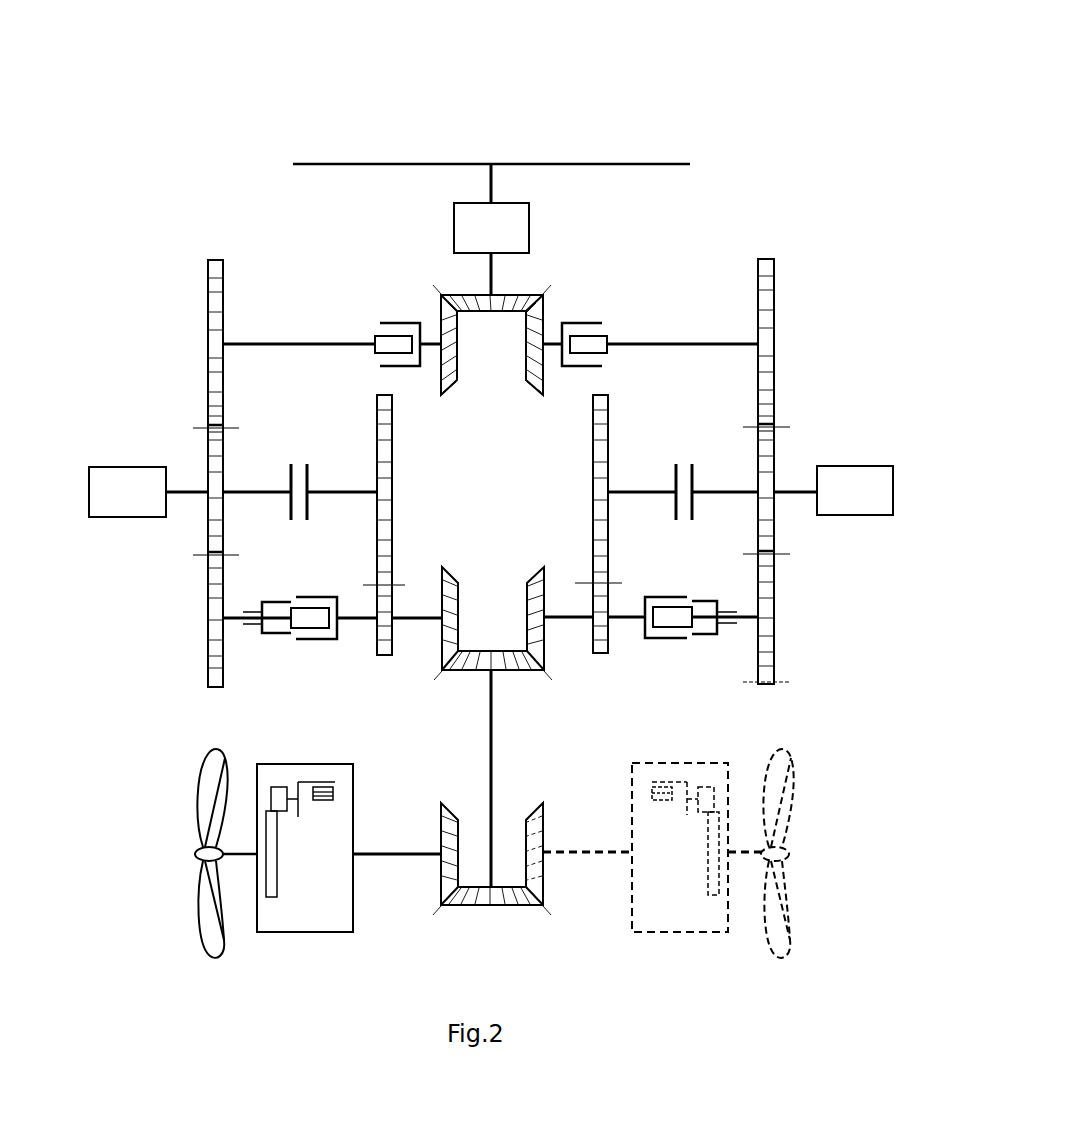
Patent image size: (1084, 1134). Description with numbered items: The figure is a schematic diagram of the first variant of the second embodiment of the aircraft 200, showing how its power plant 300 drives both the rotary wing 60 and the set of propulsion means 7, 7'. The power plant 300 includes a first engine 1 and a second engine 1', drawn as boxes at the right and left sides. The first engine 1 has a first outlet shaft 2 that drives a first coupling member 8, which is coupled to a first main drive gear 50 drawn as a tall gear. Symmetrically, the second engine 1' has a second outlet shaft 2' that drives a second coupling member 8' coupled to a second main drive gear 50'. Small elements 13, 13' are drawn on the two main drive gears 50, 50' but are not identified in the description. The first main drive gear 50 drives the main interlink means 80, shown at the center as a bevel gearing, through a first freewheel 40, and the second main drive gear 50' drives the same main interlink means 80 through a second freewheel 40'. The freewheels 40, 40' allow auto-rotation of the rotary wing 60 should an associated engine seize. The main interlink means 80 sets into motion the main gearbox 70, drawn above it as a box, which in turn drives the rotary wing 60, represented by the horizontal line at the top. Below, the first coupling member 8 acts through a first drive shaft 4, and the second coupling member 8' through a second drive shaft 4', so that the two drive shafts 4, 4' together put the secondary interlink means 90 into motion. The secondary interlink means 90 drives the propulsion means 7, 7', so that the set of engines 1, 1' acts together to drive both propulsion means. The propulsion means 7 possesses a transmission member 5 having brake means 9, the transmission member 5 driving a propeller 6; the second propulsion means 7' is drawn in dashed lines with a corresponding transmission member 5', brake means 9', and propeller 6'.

The aircraft 200 is at (588, 102).
The rotary wing 60 is at (378, 163).
The main power transmission gearbox 70 is at (506, 243).
The main interlink means 80 is at (488, 416).
The first freewheel 40 is at (650, 296).
The second freewheel 40' is at (332, 296).
The first main drive gear 50 is at (736, 471).
The second main drive gear 50' is at (182, 472).
The bearing 13 is at (739, 430).
The bearing 13' is at (246, 432).
The first coupling member 8 is at (788, 390).
The second coupling member 8' is at (180, 400).
The first engine 1 is at (855, 464).
The second engine 1' is at (127, 465).
The first outlet shaft 2 is at (712, 573).
The second outlet shaft 2' is at (263, 518).
The first drive shaft 4 is at (595, 550).
The second drive shaft 4' is at (389, 550).
The power plant 300 is at (820, 582).
The secondary interlink means 90 is at (442, 712).
The transmission member 5 is at (326, 848).
The pitch control unit 5' is at (652, 847).
The brake means 9 is at (319, 820).
The actuator 9' is at (668, 820).
The propeller 6 is at (298, 853).
The propeller 6' is at (798, 853).
The propulsion means 7 is at (290, 881).
The second propulsion means 7' is at (808, 881).